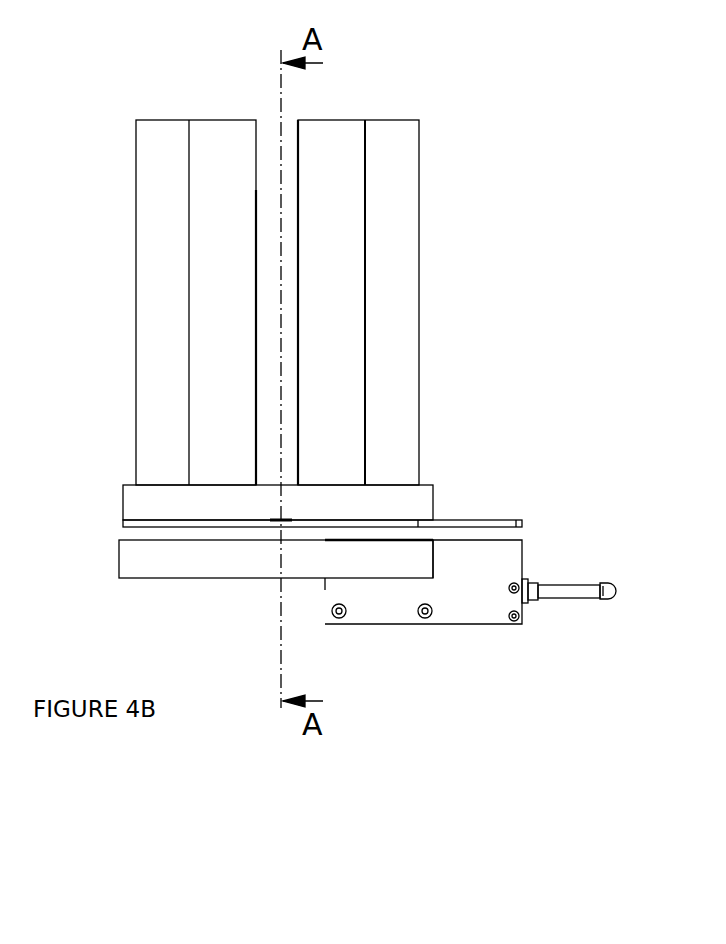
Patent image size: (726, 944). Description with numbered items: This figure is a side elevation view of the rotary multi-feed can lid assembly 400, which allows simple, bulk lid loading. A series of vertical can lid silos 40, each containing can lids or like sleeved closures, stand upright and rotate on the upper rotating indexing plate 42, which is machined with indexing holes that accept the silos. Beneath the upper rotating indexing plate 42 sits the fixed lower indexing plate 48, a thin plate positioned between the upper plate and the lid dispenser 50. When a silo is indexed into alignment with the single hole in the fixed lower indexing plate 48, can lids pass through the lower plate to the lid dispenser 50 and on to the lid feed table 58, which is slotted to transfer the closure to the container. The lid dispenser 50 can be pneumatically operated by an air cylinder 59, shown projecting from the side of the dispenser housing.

The vertical can lid silo 40 is at (321, 267).
The upper rotating indexing plate 42 is at (327, 468).
The fixed lower indexing plate 48 is at (335, 494).
The lid dispenser 50 is at (462, 625).
The lid feed table 58 is at (152, 579).
The air cylinder 59 is at (569, 580).
The rotary multi-feed can lid assembly 400 is at (505, 228).